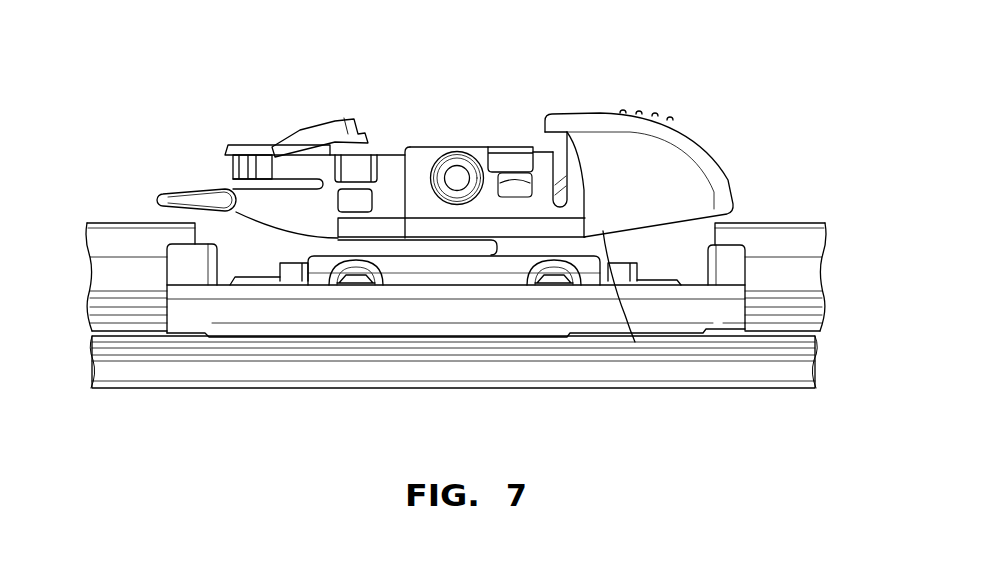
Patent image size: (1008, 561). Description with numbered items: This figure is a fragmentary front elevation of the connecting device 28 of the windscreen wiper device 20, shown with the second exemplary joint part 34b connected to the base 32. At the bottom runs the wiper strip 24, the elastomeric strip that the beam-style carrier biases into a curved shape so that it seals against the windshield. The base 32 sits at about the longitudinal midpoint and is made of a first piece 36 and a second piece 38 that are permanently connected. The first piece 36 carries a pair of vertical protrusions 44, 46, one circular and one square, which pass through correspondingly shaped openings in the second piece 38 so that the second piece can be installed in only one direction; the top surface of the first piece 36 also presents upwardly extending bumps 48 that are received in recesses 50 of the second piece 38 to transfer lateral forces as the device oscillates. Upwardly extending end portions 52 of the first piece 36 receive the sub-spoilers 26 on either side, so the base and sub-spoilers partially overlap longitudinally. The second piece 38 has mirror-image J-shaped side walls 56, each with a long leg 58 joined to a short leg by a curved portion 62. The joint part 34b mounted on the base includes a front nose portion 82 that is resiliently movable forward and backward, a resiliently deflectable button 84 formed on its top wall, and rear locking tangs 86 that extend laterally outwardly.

The windscreen wiper device 20 is at (788, 82).
The wiper strip 24 is at (147, 375).
The sub-spoilers 26 is at (135, 242).
The connecting device 28 is at (627, 82).
The base 32 is at (322, 347).
The second exemplary joint part 34b is at (673, 177).
The first piece 36 is at (504, 318).
The second piece 38 is at (593, 246).
The protrusion 44 is at (282, 262).
The protrusion 46 is at (633, 272).
The bumps 48 is at (365, 278).
The recesses 50 is at (362, 265).
The end portions 52 is at (182, 272).
The side walls 56 is at (500, 364).
The long leg 58 is at (447, 270).
The curved portion 62 is at (535, 376).
The front nose portion 82 is at (660, 148).
The resiliently deflectable button 84 is at (335, 118).
The rear locking tangs 86 is at (193, 200).